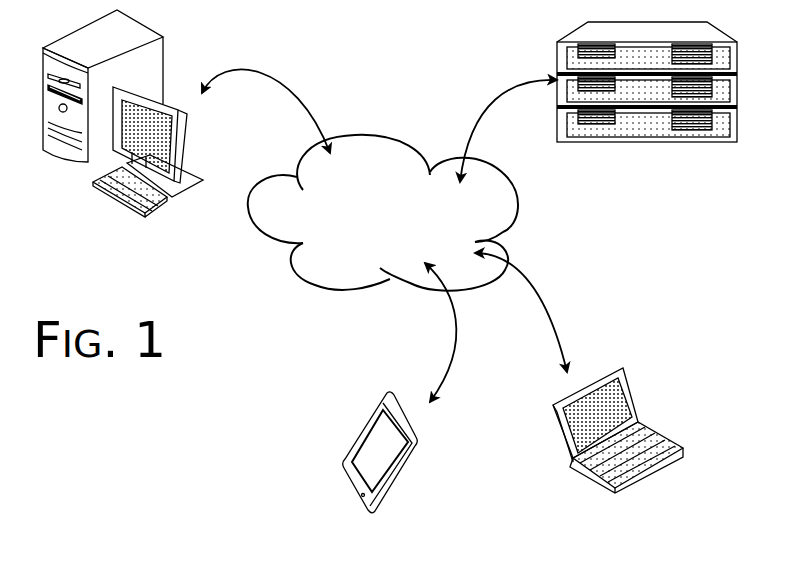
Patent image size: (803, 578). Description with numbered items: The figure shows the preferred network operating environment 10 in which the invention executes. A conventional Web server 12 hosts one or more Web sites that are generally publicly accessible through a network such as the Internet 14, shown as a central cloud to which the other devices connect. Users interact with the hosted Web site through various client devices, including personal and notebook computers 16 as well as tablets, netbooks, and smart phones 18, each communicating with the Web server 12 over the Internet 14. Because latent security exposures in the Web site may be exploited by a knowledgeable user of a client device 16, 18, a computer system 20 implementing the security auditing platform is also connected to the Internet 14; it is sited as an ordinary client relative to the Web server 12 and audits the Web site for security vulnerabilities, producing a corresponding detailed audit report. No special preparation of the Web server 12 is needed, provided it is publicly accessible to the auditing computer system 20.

The system 10 is at (265, 296).
The Web server 12 is at (625, 143).
The Internet 14 is at (340, 248).
The personal and notebook computers 16 is at (622, 368).
The tablets, netbooks, and smart phones 18 is at (372, 420).
The computer system 20 is at (100, 197).